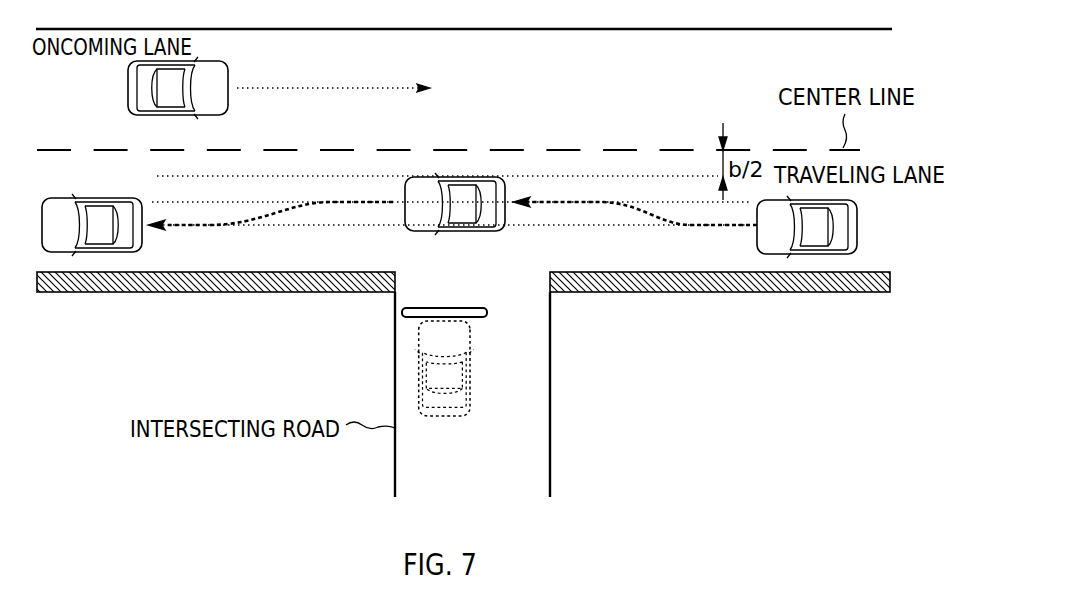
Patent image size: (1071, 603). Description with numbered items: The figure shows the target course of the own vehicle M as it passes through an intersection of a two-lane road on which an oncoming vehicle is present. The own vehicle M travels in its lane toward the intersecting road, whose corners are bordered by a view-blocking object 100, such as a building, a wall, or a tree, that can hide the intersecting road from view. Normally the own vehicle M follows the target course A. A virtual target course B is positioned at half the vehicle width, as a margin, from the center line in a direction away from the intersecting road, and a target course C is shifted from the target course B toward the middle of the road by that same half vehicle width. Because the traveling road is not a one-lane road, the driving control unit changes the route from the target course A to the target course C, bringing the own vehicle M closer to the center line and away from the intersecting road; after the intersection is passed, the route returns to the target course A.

The view-blocking object 100 is at (208, 293).
The own vehicle M is at (858, 227).
The target course A is at (452, 230).
The virtual target course B is at (437, 180).
The target course C is at (451, 204).